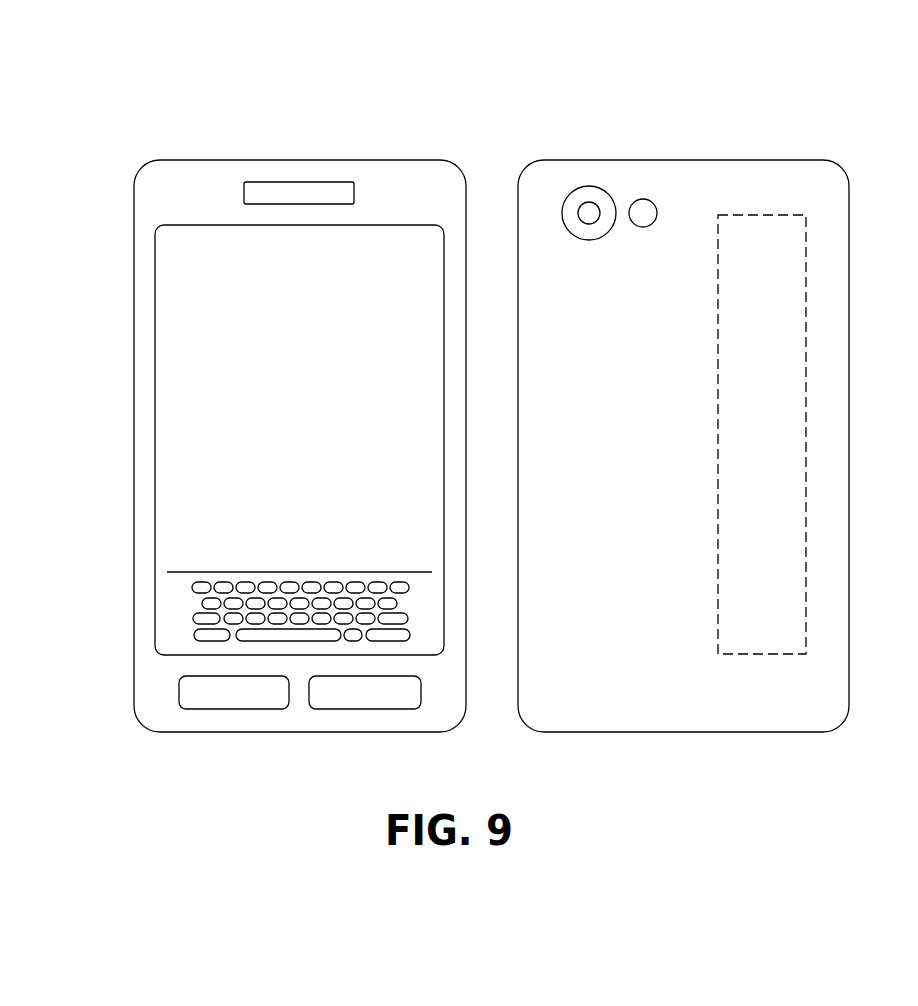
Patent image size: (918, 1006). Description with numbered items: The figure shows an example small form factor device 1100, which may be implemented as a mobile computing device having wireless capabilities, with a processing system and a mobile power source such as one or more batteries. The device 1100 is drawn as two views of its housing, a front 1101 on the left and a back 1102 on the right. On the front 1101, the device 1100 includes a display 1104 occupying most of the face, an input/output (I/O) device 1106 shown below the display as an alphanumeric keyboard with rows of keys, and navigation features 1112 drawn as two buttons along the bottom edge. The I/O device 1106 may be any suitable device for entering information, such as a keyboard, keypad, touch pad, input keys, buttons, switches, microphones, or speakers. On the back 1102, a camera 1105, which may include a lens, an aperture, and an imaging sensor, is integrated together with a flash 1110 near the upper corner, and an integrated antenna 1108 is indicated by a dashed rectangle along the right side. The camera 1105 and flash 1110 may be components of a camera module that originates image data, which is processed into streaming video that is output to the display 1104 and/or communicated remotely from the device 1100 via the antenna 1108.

The small form factor device 1100 is at (183, 46).
The front 1101 is at (251, 147).
The back 1102 is at (608, 152).
The display 1104 is at (325, 448).
The camera 1105 is at (571, 233).
The input/output (I/O) device 1106 is at (185, 607).
The integrated antenna 1108 is at (788, 445).
The flash 1110 is at (634, 201).
The navigation features 1112 is at (192, 697).